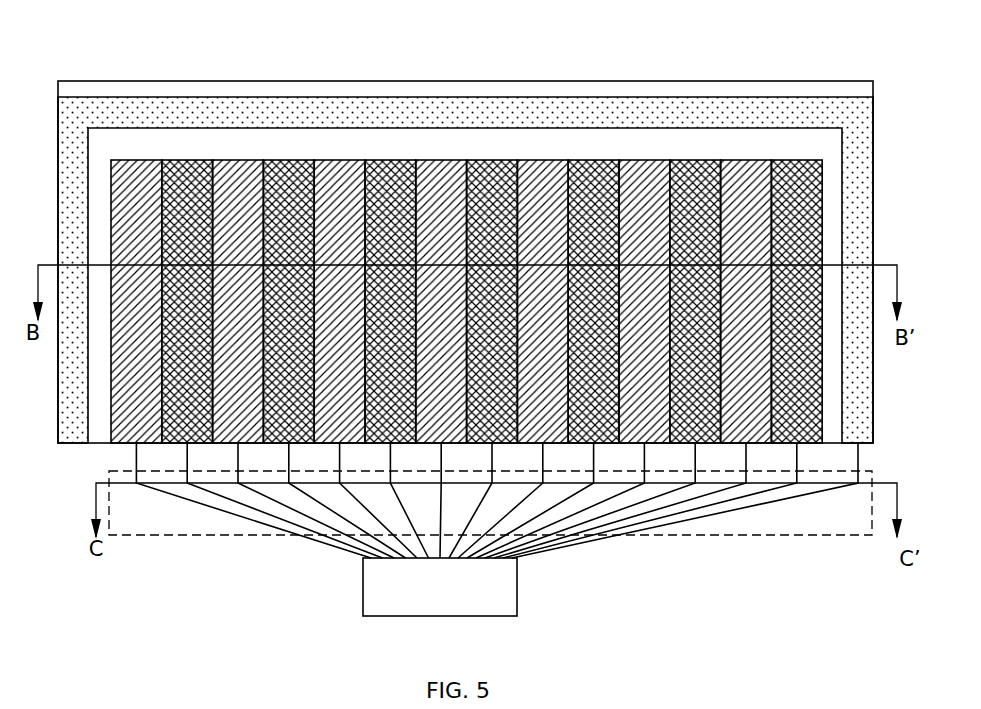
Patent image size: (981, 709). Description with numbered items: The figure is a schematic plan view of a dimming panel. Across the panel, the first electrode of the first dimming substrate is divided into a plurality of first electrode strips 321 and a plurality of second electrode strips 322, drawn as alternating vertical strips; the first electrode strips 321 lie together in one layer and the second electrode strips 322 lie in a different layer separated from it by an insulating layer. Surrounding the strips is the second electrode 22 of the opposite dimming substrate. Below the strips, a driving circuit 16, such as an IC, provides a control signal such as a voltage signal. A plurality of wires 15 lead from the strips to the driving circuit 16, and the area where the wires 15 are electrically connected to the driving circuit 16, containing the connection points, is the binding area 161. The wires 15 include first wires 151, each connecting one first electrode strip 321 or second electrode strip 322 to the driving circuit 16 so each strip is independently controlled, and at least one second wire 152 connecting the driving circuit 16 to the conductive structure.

The second electrode 22 is at (132, 95).
The first electrode strips 321 is at (344, 205).
The second electrode strips 322 is at (488, 190).
The driving circuit 16 is at (380, 596).
The binding area 161 is at (162, 535).
The wires 15 is at (497, 531).
The first wires 151 is at (728, 498).
The second wire 152 is at (818, 492).